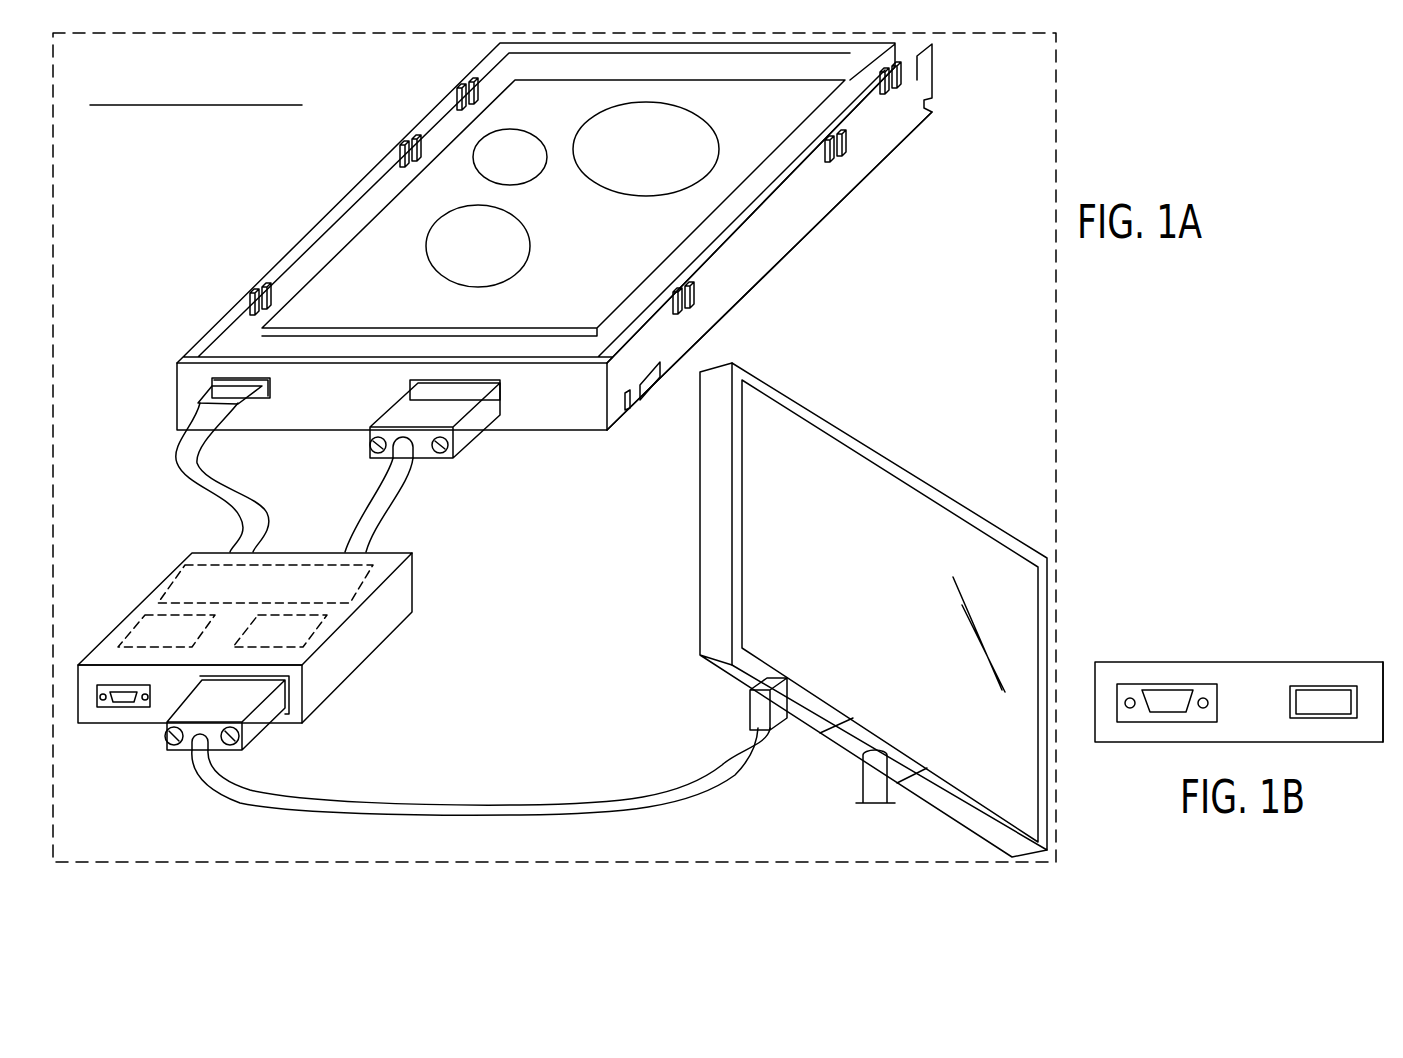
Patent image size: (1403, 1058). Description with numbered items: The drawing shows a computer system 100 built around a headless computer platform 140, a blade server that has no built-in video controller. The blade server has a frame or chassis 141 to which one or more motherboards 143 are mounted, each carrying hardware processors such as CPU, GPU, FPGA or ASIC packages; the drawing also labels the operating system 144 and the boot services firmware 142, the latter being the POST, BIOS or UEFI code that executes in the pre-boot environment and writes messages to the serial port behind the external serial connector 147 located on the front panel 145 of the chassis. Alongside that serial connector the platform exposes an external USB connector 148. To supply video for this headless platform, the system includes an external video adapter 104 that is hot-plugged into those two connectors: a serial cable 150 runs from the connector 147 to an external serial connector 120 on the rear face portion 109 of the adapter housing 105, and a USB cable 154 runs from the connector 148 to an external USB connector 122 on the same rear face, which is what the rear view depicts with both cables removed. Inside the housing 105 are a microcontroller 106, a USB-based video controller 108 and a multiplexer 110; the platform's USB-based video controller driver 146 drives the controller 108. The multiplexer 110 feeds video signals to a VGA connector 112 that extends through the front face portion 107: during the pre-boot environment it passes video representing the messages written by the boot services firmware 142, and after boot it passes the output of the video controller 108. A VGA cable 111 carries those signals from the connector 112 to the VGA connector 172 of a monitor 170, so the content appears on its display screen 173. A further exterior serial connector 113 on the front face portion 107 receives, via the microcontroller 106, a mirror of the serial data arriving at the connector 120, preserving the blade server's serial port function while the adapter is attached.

In FIG. 1A, the computer system 100 is at (1060, 122).
In FIG. 1A, the video adapter 104 is at (278, 663).
In FIG. 1B, the video adapter 104 is at (1243, 657).
In FIG. 1A, the housing 105 is at (385, 643).
In FIG. 1B, the housing 105 is at (1368, 662).
In FIG. 1A, the microcontroller 106 is at (143, 622).
In FIG. 1A, the front face portion 107 is at (90, 717).
In FIG. 1A, the USB-based video controller 108 is at (182, 580).
In FIG. 1A, the rear face portion 109 is at (405, 550).
In FIG. 1B, the rear face portion 109 is at (1245, 688).
In FIG. 1A, the multiplexer 110 is at (310, 633).
In FIG. 1A, the VGA cable 111 is at (235, 805).
In FIG. 1A, the VGA connector 112 is at (285, 696).
In FIG. 1A, the RS-232 connector 113 is at (125, 707).
In FIG. 1B, the external RS-232 connector 120 is at (1162, 686).
In FIG. 1B, the external USB connector 122 is at (1310, 688).
In FIG. 1A, the computer platform 140 is at (935, 74).
In FIG. 1A, the chassis 141 is at (794, 243).
In FIG. 1A, the boot services firmware 142 is at (693, 112).
In FIG. 1A, the motherboard 143 is at (767, 168).
In FIG. 1A, the operating system 144 is at (473, 150).
In FIG. 1A, the chassis front panel 145 is at (196, 382).
In FIG. 1A, the USB-based video controller driver 146 is at (532, 246).
In FIG. 1A, the external RS-232 connector 147 is at (468, 396).
In FIG. 1A, the external USB connector 148 is at (245, 390).
In FIG. 1A, the RS-232 cable 150 is at (385, 494).
In FIG. 1A, the USB cable 154 is at (191, 478).
In FIG. 1A, the monitor 170 is at (873, 610).
In FIG. 1A, the VGA connector 172 is at (767, 690).
In FIG. 1A, the display screen 173 is at (960, 553).